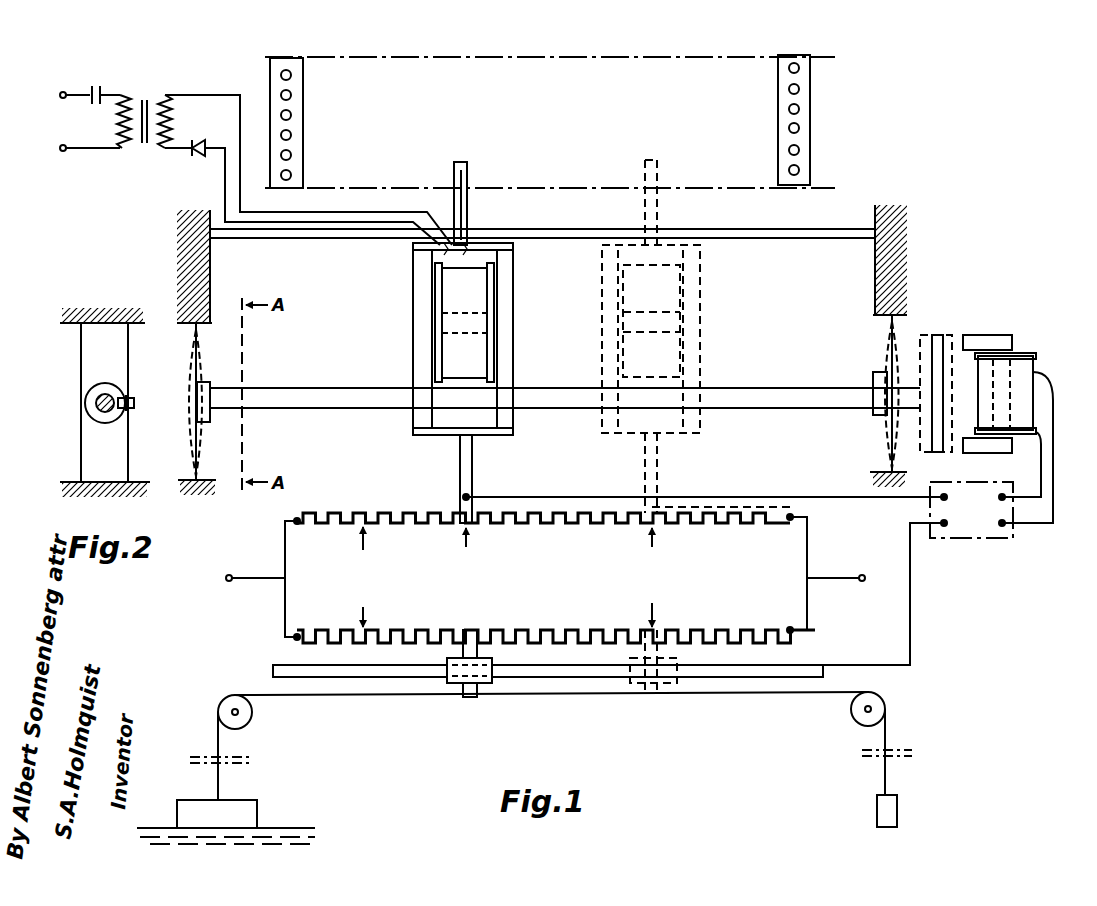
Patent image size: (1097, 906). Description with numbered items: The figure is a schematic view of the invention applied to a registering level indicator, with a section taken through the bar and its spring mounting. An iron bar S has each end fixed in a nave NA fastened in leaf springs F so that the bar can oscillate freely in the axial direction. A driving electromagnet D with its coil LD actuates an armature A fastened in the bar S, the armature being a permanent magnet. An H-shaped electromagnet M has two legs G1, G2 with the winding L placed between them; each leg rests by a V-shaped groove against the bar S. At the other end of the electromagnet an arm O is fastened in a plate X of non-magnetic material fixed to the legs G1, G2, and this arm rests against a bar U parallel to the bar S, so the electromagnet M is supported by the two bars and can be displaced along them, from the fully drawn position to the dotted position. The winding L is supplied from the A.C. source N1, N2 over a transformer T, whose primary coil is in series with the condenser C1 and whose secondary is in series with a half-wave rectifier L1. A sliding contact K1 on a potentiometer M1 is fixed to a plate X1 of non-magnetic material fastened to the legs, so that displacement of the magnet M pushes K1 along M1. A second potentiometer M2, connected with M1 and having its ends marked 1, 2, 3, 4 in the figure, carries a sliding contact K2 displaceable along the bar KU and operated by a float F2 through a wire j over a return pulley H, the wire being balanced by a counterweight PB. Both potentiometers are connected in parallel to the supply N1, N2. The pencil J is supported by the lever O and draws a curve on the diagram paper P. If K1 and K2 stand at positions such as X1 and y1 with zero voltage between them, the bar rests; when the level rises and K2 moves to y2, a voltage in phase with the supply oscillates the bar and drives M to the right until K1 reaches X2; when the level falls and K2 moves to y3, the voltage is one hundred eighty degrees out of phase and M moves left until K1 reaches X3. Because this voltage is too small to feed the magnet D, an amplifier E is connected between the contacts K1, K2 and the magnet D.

In FIG. 1, the A.C. source terminal N1 is at (165, 366).
In FIG. 1, the A.C. source terminal N2 is at (468, 328).
In FIG. 1, the condenser C1 is at (104, 85).
In FIG. 1, the transformer T is at (146, 96).
In FIG. 1, the half-wave rectifier L1 is at (200, 154).
In FIG. 1, the diagram paper P is at (748, 153).
In FIG. 1, the pencil J is at (468, 163).
In FIG. 1, the arm O is at (468, 220).
In FIG. 1, the bar U is at (775, 240).
In FIG. 1, the plate X is at (506, 247).
In FIG. 1, the plate X1 is at (508, 432).
In FIG. 1, the leg G1 is at (423, 275).
In FIG. 1, the leg G2 is at (505, 291).
In FIG. 1, the electromagnet M is at (475, 326).
In FIG. 1, the winding L is at (453, 350).
In FIG. 1, the sliding contact K1 is at (460, 460).
In FIG. 1, the iron bar S is at (728, 396).
In FIG. 2, the iron bar S is at (110, 400).
In FIG. 1, the leaf spring F is at (192, 462).
In FIG. 2, the leaf spring F is at (118, 470).
In FIG. 1, the nave NA is at (205, 382).
In FIG. 2, the nave NA is at (92, 400).
In FIG. 1, the armature A is at (938, 393).
In FIG. 1, the driving electromagnet D is at (1000, 335).
In FIG. 1, the coil LD is at (1020, 382).
In FIG. 1, the amplifier E is at (918, 573).
In FIG. 1, the potentiometer M1 is at (410, 518).
In FIG. 1, the second potentiometer M2 is at (412, 630).
In FIG. 1, the contact position X2 is at (696, 427).
In FIG. 1, the contact position X3 is at (363, 551).
In FIG. 1, the contact position y1 is at (468, 640).
In FIG. 1, the contact position y2 is at (668, 609).
In FIG. 1, the contact position y3 is at (363, 608).
In FIG. 1, the terminal 1 is at (297, 526).
In FIG. 1, the terminal 2 is at (789, 522).
In FIG. 1, the terminal 3 is at (297, 633).
In FIG. 1, the terminal 4 is at (790, 628).
In FIG. 1, the sliding contact K2 is at (478, 658).
In FIG. 1, the bar KU is at (800, 676).
In FIG. 1, the wire j is at (348, 698).
In FIG. 1, the return pulley H is at (226, 702).
In FIG. 1, the float F2 is at (258, 818).
In FIG. 1, the counterweight PB is at (896, 822).